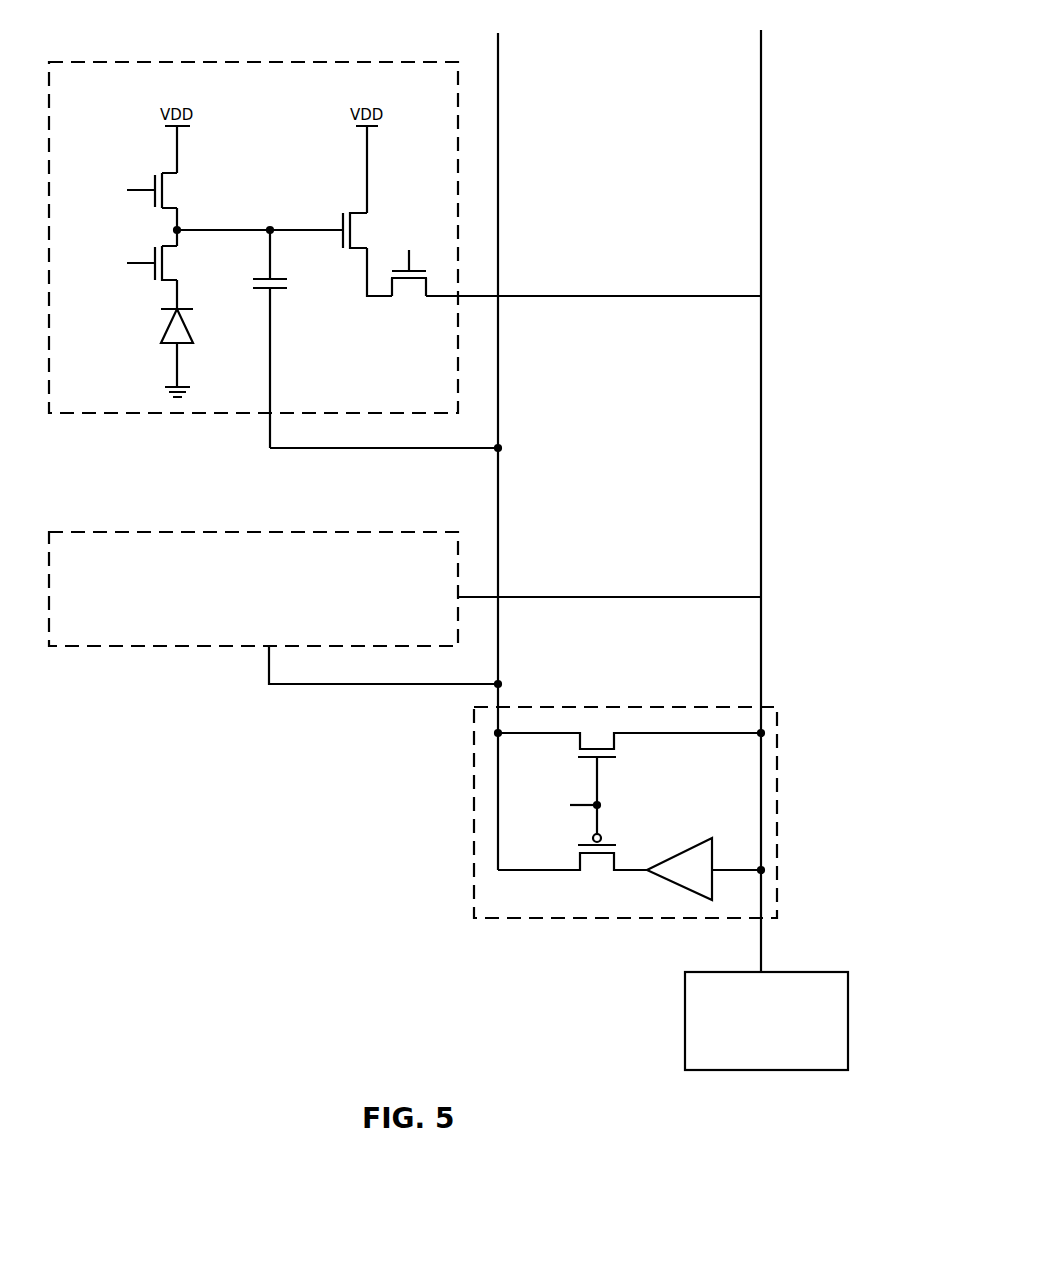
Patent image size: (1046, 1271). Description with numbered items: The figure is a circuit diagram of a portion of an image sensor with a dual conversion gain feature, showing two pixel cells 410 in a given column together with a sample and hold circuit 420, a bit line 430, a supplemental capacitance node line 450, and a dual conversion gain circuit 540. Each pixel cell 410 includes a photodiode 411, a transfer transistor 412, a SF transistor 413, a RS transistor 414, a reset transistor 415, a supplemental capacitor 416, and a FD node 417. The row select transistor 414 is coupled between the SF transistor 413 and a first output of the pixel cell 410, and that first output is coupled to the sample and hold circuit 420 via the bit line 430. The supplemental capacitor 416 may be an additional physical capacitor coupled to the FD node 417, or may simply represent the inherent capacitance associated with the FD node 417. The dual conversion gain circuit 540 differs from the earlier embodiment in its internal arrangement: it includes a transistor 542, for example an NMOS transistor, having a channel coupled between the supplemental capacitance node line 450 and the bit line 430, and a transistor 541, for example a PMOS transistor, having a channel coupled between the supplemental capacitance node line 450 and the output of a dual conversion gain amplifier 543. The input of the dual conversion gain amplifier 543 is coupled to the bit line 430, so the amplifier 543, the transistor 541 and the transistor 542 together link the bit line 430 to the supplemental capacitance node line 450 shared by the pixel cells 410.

The pixel cell 410 is at (458, 62).
The photodiode 411 is at (161, 353).
The transfer transistor 412 is at (145, 269).
The SF transistor 413 is at (355, 252).
The RS transistor 414 is at (576, 263).
The reset transistor 415 is at (142, 201).
The supplemental capacitor 416 is at (288, 339).
The FD node 417 is at (232, 229).
The sample and hold circuit 420 is at (815, 972).
The bit line 430 is at (761, 465).
The supplemental capacitance node line 450 is at (498, 460).
The dual conversion gain circuit 540 is at (674, 791).
The transistor 541 is at (572, 848).
The transistor 542 is at (629, 759).
The dual conversion gain amplifier 543 is at (705, 857).